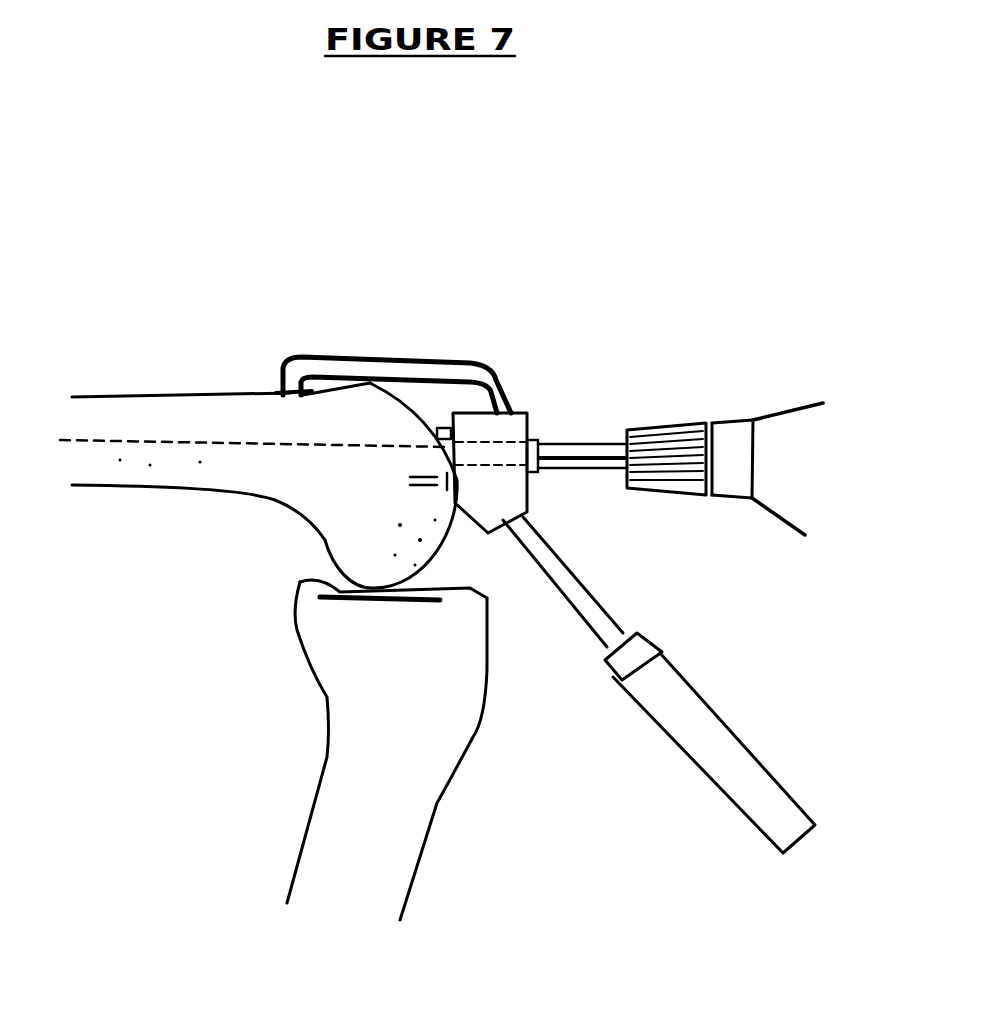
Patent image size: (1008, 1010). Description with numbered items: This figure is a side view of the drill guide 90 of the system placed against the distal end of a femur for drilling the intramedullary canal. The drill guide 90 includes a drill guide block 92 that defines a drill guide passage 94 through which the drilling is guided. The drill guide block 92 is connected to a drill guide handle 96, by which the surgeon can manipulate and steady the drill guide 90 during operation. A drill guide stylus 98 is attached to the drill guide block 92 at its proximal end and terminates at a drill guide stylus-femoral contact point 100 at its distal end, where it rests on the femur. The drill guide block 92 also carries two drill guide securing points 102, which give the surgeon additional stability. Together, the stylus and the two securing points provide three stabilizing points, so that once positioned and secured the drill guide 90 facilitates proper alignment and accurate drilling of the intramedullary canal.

The drill guide 90 is at (520, 390).
The drill guide block 92 is at (500, 488).
The drill guide passage 94 is at (488, 455).
The drill guide handle 96 is at (607, 608).
The drill guide stylus 98 is at (393, 357).
The drill guide stylus-femoral contact point 100 is at (272, 388).
The drill guide securing points 102 is at (420, 426).